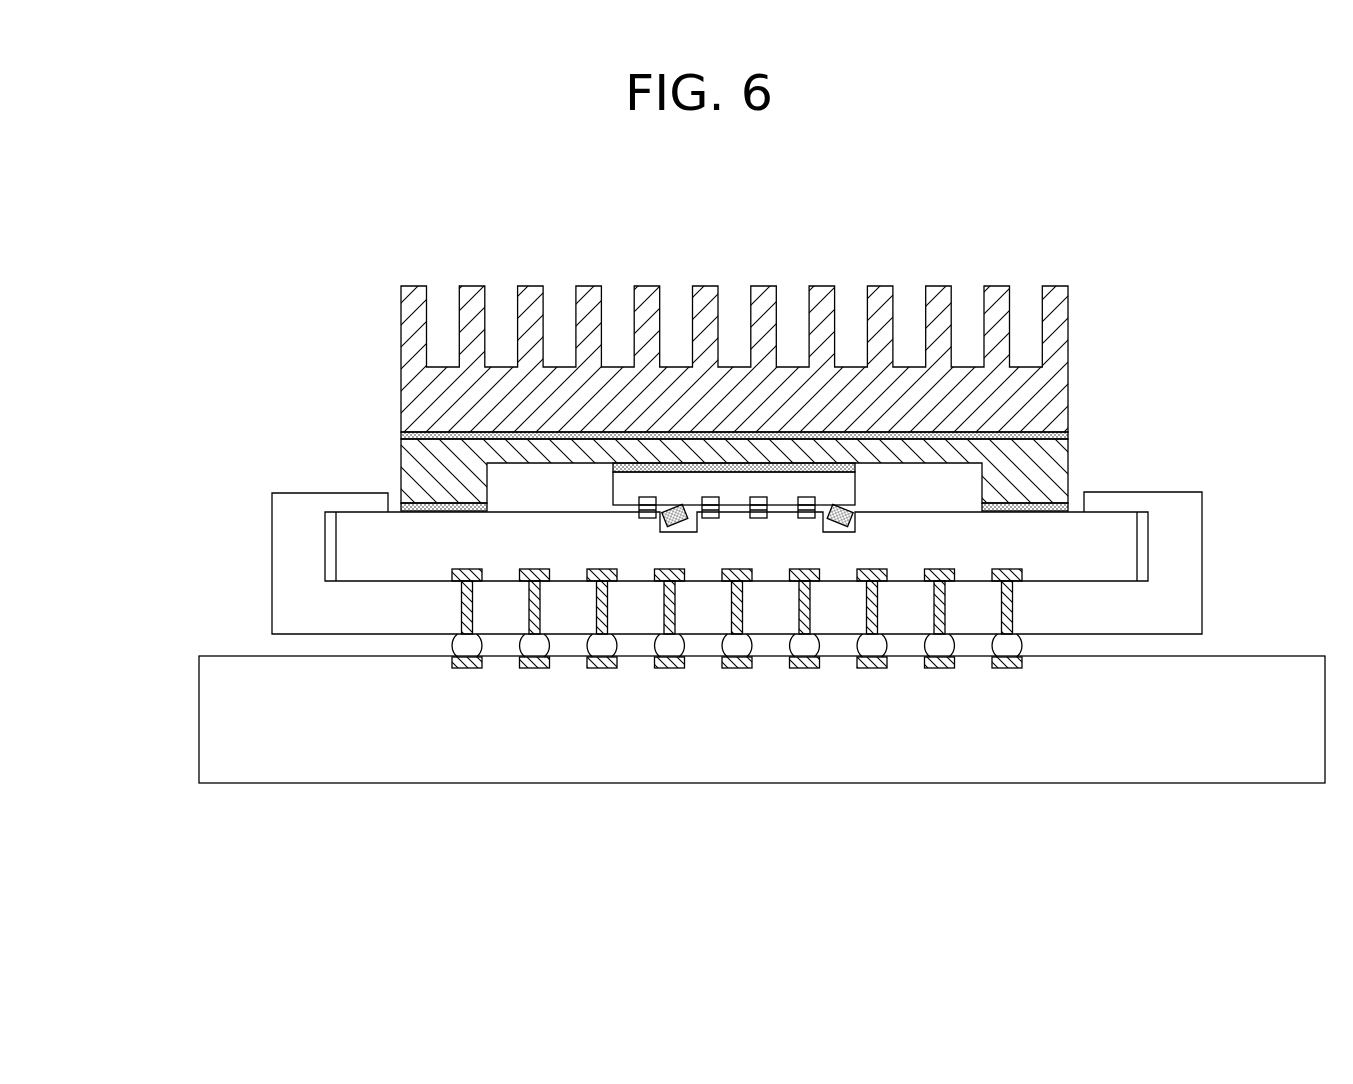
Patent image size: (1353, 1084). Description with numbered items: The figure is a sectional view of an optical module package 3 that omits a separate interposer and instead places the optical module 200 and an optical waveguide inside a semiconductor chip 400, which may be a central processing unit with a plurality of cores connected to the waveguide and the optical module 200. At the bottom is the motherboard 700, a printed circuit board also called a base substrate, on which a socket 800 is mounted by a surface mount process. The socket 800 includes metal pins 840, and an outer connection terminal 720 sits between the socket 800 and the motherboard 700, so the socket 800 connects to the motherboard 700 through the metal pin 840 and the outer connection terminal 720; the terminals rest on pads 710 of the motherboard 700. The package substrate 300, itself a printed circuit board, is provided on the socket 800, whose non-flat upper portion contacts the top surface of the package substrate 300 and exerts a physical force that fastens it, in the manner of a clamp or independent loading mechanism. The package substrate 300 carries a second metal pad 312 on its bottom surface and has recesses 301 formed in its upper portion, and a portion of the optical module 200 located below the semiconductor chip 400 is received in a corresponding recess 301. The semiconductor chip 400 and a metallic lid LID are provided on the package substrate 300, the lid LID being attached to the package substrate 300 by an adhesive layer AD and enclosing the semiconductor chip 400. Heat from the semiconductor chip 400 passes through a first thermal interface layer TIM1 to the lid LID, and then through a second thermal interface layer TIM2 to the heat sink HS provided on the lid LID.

The optical module package 3 is at (1143, 220).
The heat sink HS is at (405, 388).
The first thermal interface layer TIM1 is at (664, 462).
The second thermal interface layer TIM2 is at (400, 436).
The lid LID is at (405, 470).
The adhesive layer AD is at (397, 508).
The semiconductor chip 400 is at (613, 486).
The optical module 200 is at (660, 522).
The package substrate 300 is at (350, 528).
The recesses 301 is at (843, 528).
The second metal pad 312 is at (450, 573).
The socket 800 is at (286, 587).
The metal pin 840 is at (462, 612).
The outer connection terminal 720 is at (455, 645).
The board pads 710 is at (469, 662).
The motherboard 700 is at (212, 718).